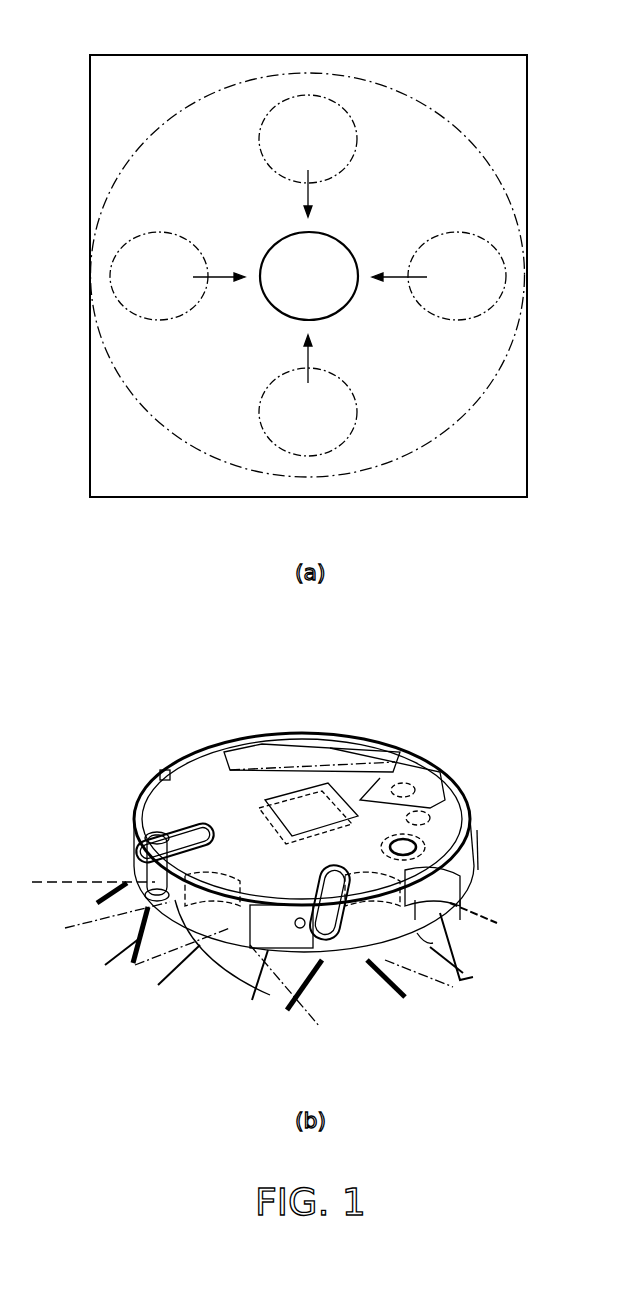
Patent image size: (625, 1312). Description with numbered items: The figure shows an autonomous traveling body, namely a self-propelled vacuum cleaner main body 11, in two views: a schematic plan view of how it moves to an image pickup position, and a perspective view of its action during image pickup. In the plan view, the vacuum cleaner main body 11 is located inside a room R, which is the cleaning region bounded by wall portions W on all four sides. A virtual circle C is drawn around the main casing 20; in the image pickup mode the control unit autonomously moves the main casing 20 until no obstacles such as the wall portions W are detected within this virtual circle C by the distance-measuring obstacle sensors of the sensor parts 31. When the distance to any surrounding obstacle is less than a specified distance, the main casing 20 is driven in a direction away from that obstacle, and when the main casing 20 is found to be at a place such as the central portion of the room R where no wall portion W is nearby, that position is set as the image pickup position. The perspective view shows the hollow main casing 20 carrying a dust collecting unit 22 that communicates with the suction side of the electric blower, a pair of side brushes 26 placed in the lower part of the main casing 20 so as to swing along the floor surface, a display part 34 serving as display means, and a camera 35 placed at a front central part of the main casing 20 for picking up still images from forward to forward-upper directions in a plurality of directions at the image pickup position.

The vacuum cleaner main body 11 is at (359, 232).
The main casing 20 is at (350, 305).
The dust collecting unit 22 is at (447, 808).
The side brushes 26 is at (109, 850).
The sensor parts 31 is at (266, 905).
The display part 34 is at (356, 800).
The camera 35 is at (235, 865).
The wall portion W is at (218, 54).
The room R is at (483, 73).
The virtual circle C is at (509, 193).